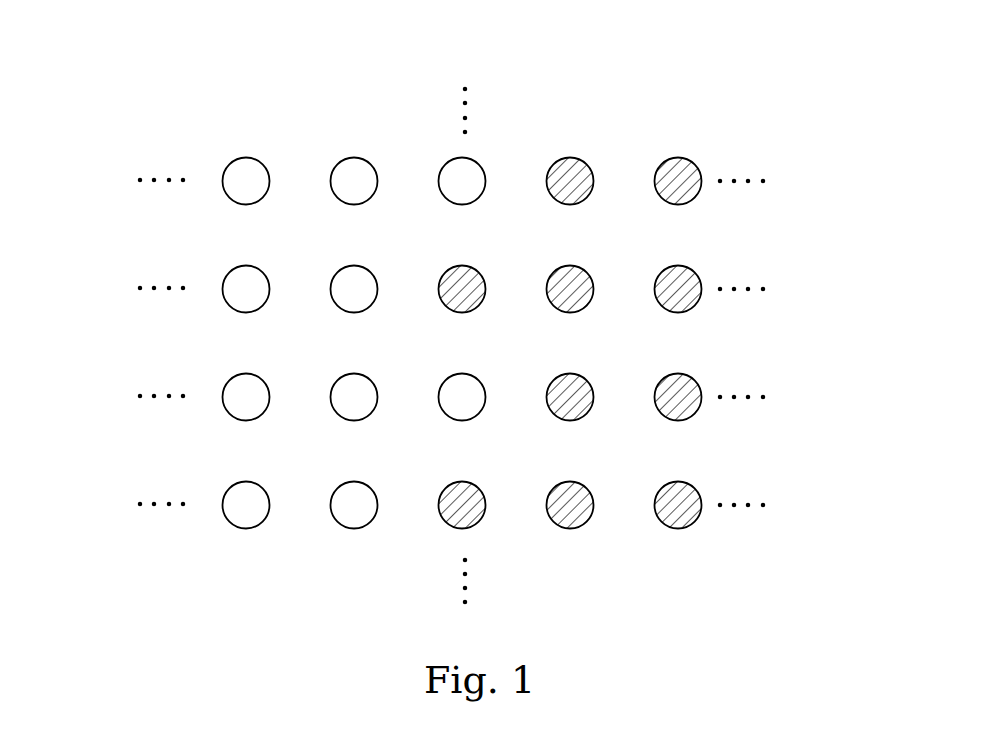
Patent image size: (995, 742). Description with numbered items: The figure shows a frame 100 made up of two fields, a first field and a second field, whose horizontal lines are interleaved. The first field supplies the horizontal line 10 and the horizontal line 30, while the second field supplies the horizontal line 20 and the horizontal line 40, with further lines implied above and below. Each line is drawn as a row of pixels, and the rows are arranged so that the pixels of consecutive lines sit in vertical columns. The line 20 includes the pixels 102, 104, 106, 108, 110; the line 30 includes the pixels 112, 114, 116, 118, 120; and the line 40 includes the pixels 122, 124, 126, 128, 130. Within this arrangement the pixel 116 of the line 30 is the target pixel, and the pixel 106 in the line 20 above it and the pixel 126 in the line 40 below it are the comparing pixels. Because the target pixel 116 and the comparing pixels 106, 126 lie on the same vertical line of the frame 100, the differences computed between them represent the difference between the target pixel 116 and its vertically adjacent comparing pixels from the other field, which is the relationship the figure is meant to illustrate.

The frame 100 is at (760, 98).
The horizontal line 10 is at (137, 169).
The horizontal line 20 is at (137, 277).
The horizontal line 30 is at (137, 385).
The horizontal line 40 is at (137, 493).
The pixel 102 is at (246, 265).
The pixel 104 is at (354, 265).
The comparing pixel 106 is at (462, 265).
The pixel 108 is at (570, 265).
The pixel 110 is at (678, 265).
The pixel 112 is at (246, 373).
The pixel 114 is at (354, 373).
The target pixel 116 is at (462, 373).
The pixel 118 is at (570, 373).
The pixel 120 is at (678, 373).
The pixel 122 is at (246, 481).
The pixel 124 is at (354, 481).
The comparing pixel 126 is at (462, 481).
The pixel 128 is at (570, 481).
The pixel 130 is at (678, 481).